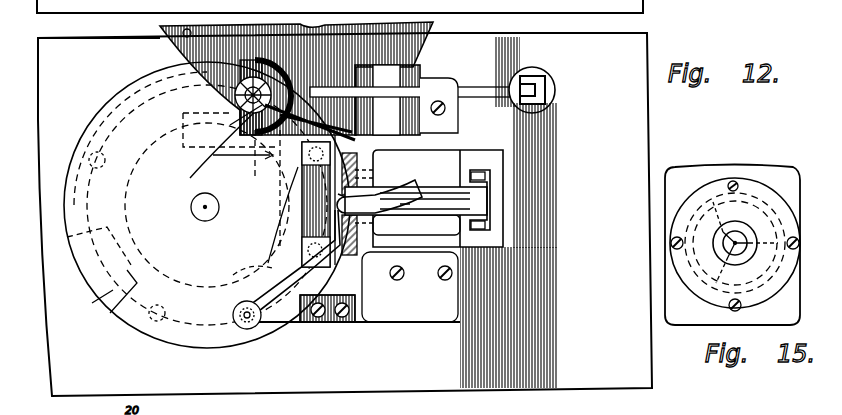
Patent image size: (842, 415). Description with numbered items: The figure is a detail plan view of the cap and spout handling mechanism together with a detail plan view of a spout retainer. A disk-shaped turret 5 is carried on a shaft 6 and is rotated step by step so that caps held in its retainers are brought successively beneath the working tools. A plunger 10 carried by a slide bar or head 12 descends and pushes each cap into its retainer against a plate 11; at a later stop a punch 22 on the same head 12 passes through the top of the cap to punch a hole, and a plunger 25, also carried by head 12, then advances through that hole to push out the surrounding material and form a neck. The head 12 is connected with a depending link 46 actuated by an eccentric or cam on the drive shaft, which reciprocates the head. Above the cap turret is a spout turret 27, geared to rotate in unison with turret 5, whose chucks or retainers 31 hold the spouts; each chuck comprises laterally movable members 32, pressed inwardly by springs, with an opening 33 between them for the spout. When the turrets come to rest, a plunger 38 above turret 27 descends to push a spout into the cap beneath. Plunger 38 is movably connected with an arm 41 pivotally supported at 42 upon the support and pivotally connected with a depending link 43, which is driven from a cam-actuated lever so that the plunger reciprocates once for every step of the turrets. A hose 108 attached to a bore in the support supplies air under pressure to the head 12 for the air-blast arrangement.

In FIG. 12, the turret 5 is at (110, 274).
In FIG. 12, the shaft 6 is at (205, 221).
In FIG. 12, the plunger 10 is at (245, 330).
In FIG. 12, the plate 11 is at (90, 152).
In FIG. 12, the slide bar or head 12 is at (372, 176).
In FIG. 12, the punch 22 is at (249, 267).
In FIG. 12, the plunger 25 is at (289, 198).
In FIG. 12, the turret 27 is at (178, 42).
In FIG. 15, the turret 27 is at (722, 172).
In FIG. 15, the chucks or retainers 31 is at (735, 272).
In FIG. 15, the laterally movable members 32 is at (727, 250).
In FIG. 15, the opening 33 is at (722, 243).
In FIG. 12, the plunger 38 is at (213, 146).
In FIG. 12, the arm 41 is at (292, 90).
In FIG. 12, the pivot 42 is at (385, 72).
In FIG. 12, the depending link 43 is at (548, 75).
In FIG. 12, the depending link 46 is at (488, 172).
In FIG. 12, the hose 108 is at (408, 197).